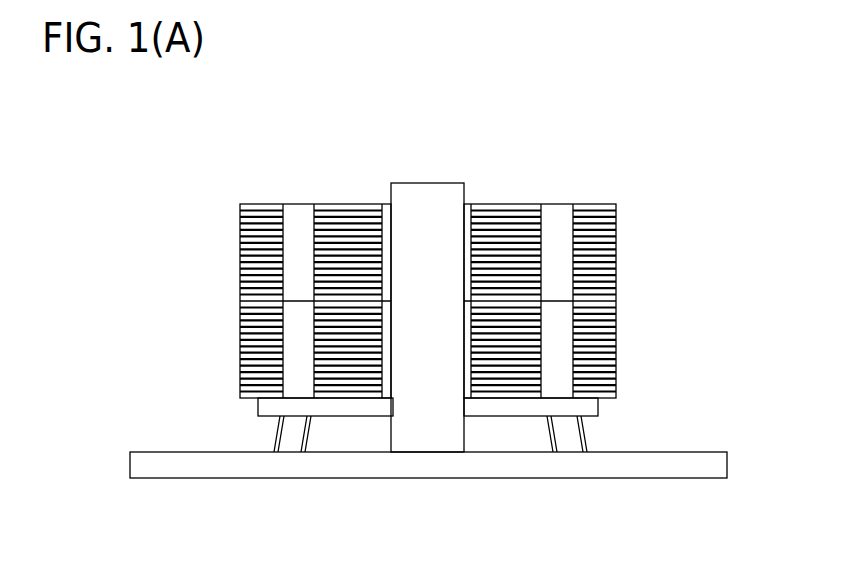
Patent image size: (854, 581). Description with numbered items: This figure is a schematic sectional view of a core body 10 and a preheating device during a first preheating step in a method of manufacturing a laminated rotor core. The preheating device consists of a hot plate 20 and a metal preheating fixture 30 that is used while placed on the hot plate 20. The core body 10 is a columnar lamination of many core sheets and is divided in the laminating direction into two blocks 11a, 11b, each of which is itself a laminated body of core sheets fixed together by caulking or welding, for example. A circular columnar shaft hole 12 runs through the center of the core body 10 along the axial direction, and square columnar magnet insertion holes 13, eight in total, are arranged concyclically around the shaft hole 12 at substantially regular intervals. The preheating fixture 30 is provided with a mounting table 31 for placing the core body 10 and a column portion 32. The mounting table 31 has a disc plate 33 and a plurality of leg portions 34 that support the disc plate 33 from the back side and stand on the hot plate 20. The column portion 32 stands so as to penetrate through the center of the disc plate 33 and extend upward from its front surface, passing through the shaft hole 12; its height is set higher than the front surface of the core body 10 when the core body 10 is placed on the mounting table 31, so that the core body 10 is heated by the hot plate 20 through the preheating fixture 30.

The core body 10 is at (460, 270).
The block 11a is at (240, 230).
The block 11b is at (240, 330).
The shaft hole 12 is at (443, 270).
The magnet insertion hole 13 is at (557, 213).
The hot plate 20 is at (709, 465).
The preheating fixture 30 is at (474, 468).
The mounting table 31 is at (370, 480).
The column portion 32 is at (420, 182).
The disc plate 33 is at (493, 417).
The leg portion 34 is at (548, 433).